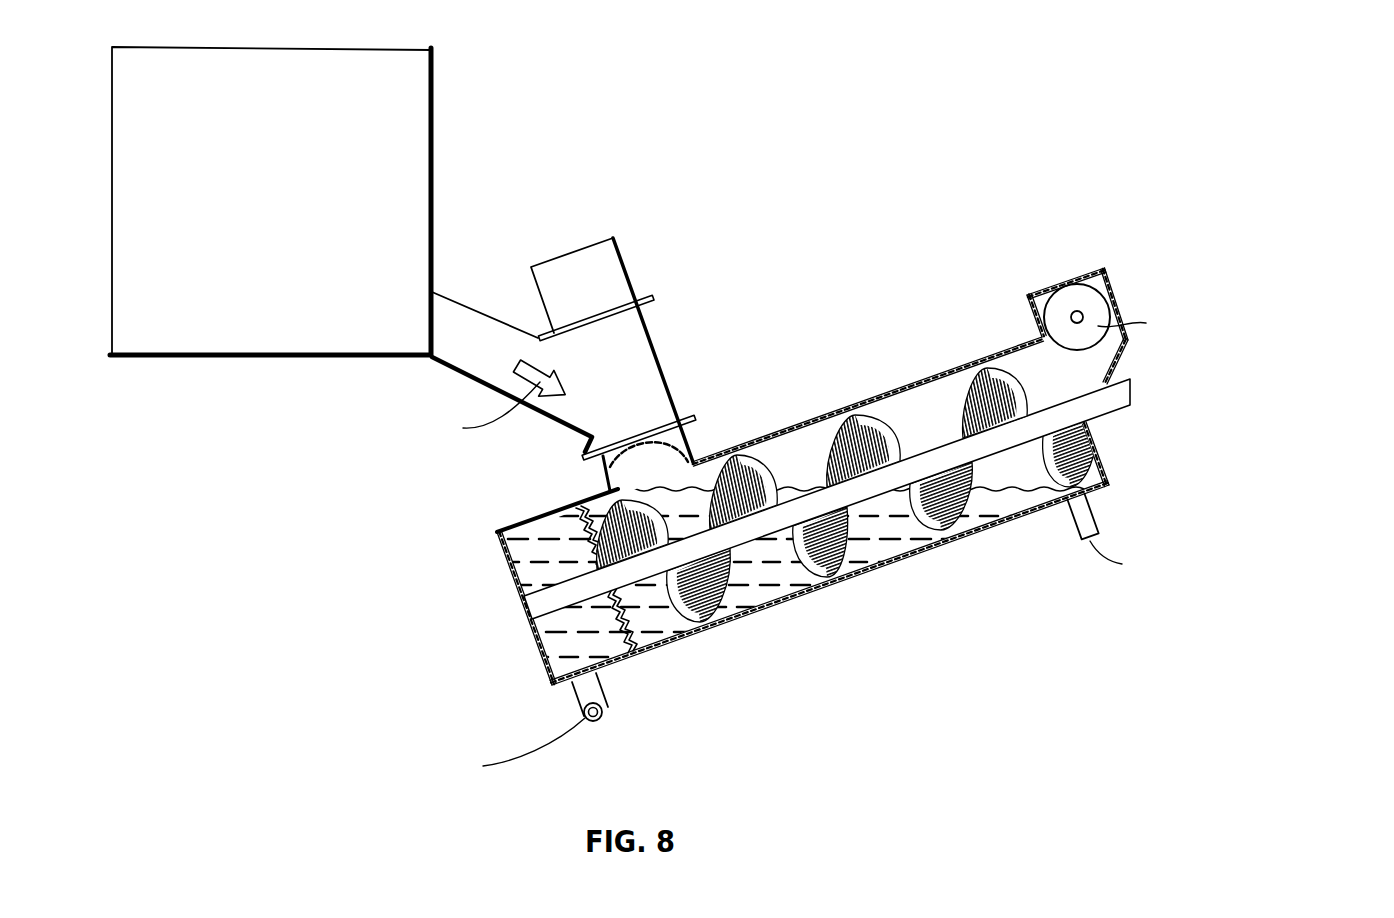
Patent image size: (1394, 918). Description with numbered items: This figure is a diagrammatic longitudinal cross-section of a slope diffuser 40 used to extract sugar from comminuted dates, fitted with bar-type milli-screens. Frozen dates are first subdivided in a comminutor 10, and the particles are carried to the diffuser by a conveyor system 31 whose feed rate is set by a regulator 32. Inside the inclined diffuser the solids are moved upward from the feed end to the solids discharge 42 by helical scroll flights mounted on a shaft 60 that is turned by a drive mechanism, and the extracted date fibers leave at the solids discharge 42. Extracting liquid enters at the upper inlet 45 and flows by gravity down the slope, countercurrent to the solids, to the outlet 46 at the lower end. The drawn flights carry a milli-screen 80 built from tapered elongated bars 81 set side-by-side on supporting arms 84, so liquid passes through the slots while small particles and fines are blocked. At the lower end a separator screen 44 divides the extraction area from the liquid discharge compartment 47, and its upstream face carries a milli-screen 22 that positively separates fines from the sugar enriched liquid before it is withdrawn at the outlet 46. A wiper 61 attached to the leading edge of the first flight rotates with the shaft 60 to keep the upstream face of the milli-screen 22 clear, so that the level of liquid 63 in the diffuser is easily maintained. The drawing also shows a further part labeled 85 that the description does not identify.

The comminutor 10 is at (388, 117).
The conveyor system 31 is at (500, 345).
The regulator 32 is at (602, 267).
The level of liquid 63 is at (667, 486).
The wiper 61 is at (607, 502).
The liquid discharge compartment 47 is at (527, 552).
The separator screen 44 is at (805, 572).
The milli-screen 22 is at (630, 615).
The slope diffuser 40 is at (759, 504).
The solids discharge 42 is at (1082, 298).
The milli-screen 80 is at (869, 480).
The elongated bars 81 is at (845, 572).
The supporting arms 84 is at (812, 457).
The flight edge 85 is at (830, 437).
The shaft 60 is at (1128, 396).
The outlet 46 is at (603, 712).
The inlet 45 is at (1098, 518).